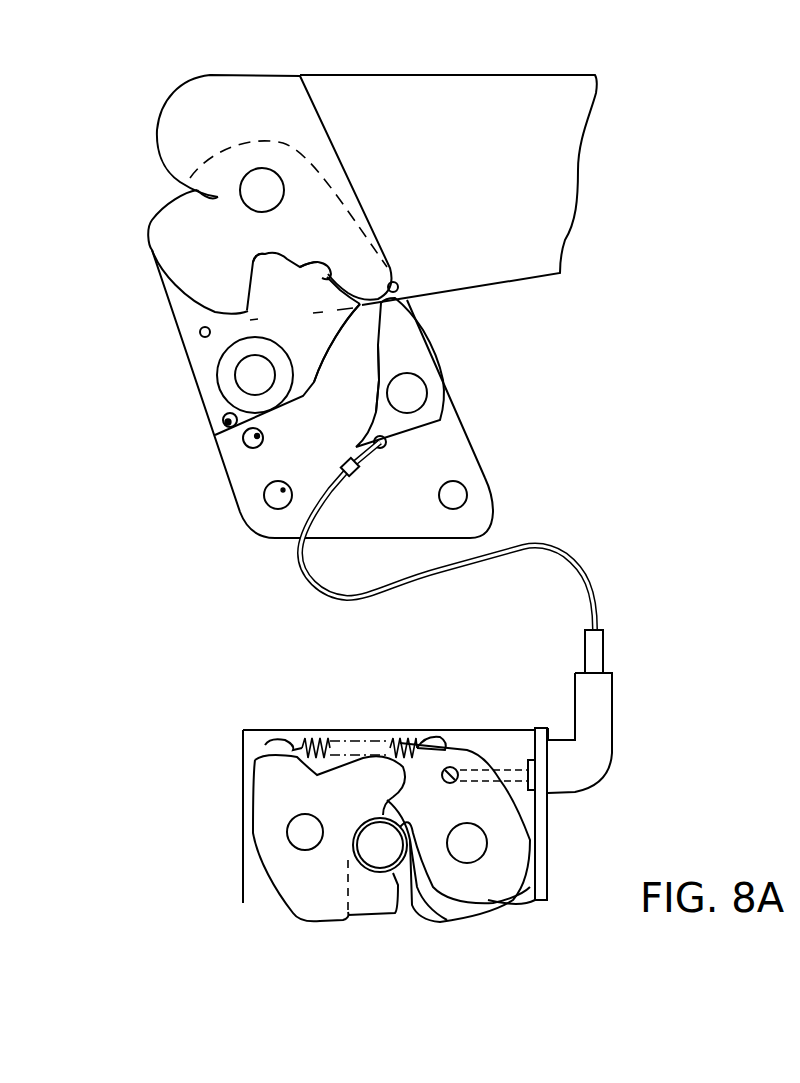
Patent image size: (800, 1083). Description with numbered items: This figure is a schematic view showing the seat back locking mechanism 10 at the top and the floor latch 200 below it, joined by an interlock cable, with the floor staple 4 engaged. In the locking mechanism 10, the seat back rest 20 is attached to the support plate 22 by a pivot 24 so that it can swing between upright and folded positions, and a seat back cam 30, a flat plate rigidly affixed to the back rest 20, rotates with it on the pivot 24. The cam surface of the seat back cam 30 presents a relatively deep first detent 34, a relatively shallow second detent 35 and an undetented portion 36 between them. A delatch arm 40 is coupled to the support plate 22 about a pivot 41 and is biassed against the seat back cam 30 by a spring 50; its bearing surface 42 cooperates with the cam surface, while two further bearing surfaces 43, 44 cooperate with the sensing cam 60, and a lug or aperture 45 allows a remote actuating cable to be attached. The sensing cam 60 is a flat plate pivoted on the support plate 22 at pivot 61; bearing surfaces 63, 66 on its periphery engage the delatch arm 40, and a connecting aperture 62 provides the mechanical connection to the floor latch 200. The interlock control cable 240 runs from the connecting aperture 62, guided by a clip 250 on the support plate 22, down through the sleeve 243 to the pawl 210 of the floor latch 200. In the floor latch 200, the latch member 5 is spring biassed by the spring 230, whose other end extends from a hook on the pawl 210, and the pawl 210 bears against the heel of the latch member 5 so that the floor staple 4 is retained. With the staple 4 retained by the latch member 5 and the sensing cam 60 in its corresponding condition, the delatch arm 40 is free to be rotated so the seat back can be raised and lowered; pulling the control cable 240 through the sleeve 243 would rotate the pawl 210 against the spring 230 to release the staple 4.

The locking mechanism 10 is at (384, 319).
The seat back rest 20 is at (553, 230).
The support plate 22 is at (250, 510).
The pivot 24 is at (262, 192).
The seat back cam 30 is at (313, 132).
The first detent 34 is at (310, 262).
The second detent 35 is at (221, 209).
The undetented portion 36 is at (200, 300).
The delatch arm 40 is at (290, 332).
The pivot 41 is at (262, 375).
The bearing surface 42 is at (275, 276).
The bearing surface 43 is at (330, 285).
The bearing surface 44 is at (343, 323).
The lug or aperture 45 is at (217, 427).
The spring 50 is at (237, 430).
The sensing cam 60 is at (394, 403).
The pivot 61 is at (413, 393).
The connecting aperture 62 is at (383, 447).
The bearing surface 63 is at (353, 381).
The bearing surface 66 is at (398, 298).
The floor latch 200 is at (460, 682).
The pawl 210 is at (530, 902).
The spring 230 is at (305, 676).
The interlock control cable 240 is at (597, 602).
The sleeve 243 is at (595, 743).
The clip 250 is at (343, 465).
The floor staple 4 is at (387, 859).
The latch member 5 is at (320, 894).